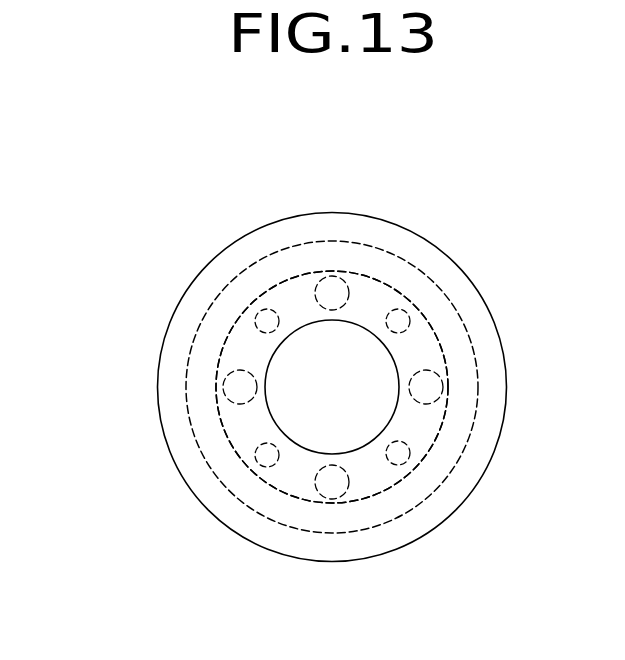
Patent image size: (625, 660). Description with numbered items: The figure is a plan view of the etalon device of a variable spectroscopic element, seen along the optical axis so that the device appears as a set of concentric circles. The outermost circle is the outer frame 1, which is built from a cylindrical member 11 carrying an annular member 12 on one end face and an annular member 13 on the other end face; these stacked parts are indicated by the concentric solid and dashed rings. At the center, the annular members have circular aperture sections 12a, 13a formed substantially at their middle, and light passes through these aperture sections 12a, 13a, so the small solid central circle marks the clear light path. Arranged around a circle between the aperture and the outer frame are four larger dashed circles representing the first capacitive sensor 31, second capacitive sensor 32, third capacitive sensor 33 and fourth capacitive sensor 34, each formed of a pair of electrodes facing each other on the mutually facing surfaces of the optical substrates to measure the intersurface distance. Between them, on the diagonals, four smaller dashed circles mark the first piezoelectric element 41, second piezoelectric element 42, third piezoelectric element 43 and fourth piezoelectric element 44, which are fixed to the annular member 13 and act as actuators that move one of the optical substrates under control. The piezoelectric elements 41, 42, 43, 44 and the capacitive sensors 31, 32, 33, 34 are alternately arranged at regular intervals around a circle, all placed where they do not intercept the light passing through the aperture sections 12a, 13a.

The outer frame 1 is at (80, 430).
The cylindrical member 11 is at (297, 387).
The annular member 12 is at (283, 387).
The annular member 13 is at (268, 412).
The aperture section 12a is at (332, 387).
The aperture section 13a is at (332, 387).
The first capacitive sensor 31 is at (173, 390).
The second capacitive sensor 32 is at (331, 224).
The third capacitive sensor 33 is at (494, 385).
The fourth capacitive sensor 34 is at (333, 552).
The first piezoelectric element 41 is at (199, 294).
The second piezoelectric element 42 is at (425, 252).
The third piezoelectric element 43 is at (467, 480).
The fourth piezoelectric element 44 is at (242, 524).